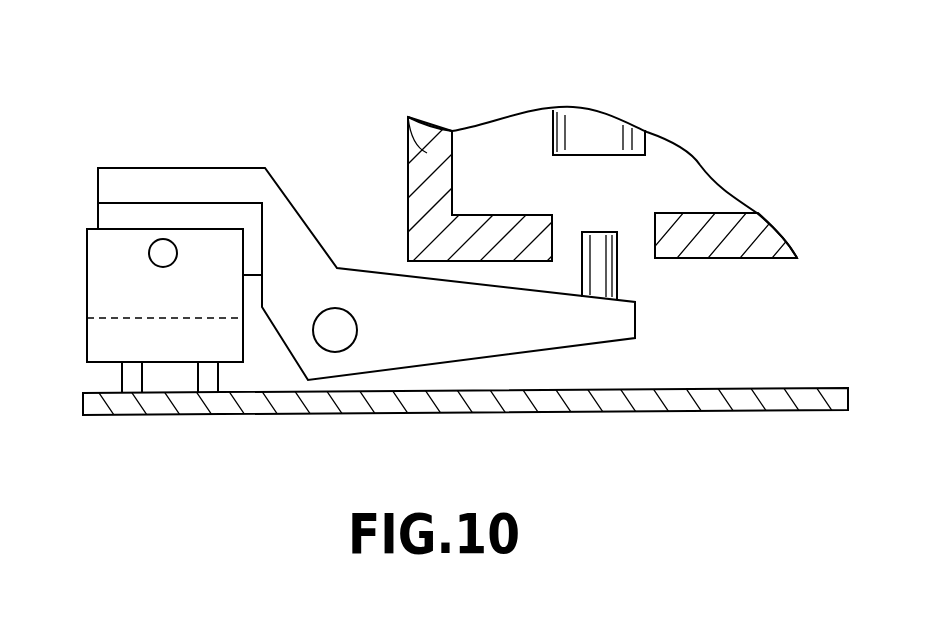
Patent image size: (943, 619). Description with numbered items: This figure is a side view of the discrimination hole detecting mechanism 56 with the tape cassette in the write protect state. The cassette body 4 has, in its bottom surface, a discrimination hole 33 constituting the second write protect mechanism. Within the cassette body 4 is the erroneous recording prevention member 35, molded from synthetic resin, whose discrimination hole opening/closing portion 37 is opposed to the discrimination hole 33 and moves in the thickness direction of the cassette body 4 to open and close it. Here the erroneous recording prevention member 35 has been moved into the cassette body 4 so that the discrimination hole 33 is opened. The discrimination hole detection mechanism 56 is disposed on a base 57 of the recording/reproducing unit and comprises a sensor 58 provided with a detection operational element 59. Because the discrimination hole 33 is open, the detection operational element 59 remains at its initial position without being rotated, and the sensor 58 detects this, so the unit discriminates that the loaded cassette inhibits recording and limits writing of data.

The cassette body 4 is at (407, 133).
The discrimination hole 33 is at (653, 240).
The erroneous recording prevention member 35 is at (582, 118).
The discrimination hole opening/closing portion 37 is at (645, 130).
The discrimination hole detection mechanism 56 is at (321, 205).
The base 57 is at (603, 403).
The sensor 58 is at (87, 285).
The detection operational element 59 is at (285, 222).